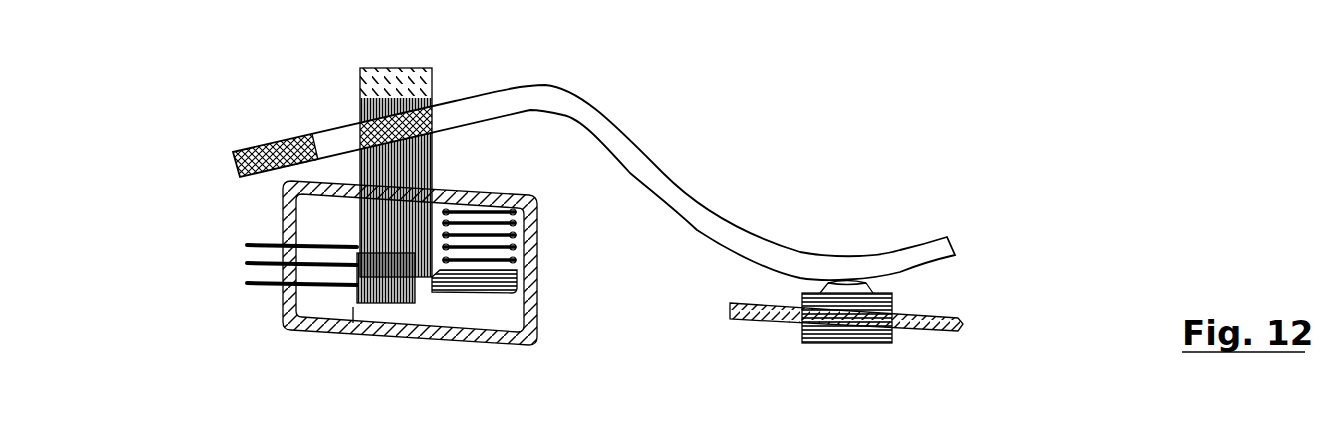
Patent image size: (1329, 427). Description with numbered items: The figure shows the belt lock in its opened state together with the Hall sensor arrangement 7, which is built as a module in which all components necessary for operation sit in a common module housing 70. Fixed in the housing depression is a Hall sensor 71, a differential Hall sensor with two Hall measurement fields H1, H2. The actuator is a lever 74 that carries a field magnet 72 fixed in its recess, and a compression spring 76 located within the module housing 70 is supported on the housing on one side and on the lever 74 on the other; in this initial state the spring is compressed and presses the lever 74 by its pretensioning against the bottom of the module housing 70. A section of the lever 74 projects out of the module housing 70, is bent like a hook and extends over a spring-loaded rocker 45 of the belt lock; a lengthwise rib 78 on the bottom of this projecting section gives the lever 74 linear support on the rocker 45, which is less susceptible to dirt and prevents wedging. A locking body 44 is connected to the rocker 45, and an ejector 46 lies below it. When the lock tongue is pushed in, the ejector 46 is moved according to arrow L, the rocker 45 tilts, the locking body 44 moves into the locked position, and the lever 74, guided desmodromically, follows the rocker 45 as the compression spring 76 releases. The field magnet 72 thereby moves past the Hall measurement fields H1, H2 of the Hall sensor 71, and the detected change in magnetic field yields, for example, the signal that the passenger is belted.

The Hall sensor arrangement 7 is at (364, 188).
The module housing 70 is at (253, 267).
The Hall sensor 71 is at (297, 333).
The field magnet 72 is at (437, 197).
The lever 74 is at (402, 70).
The compression spring 76 is at (517, 240).
The lengthwise rib 78 is at (358, 115).
The rocker 45 is at (590, 103).
The locking body 44 is at (877, 265).
The ejector 46 is at (895, 300).
The Hall measurement field H1 is at (430, 293).
The Hall measurement field H2 is at (405, 303).
The arrow L is at (753, 358).